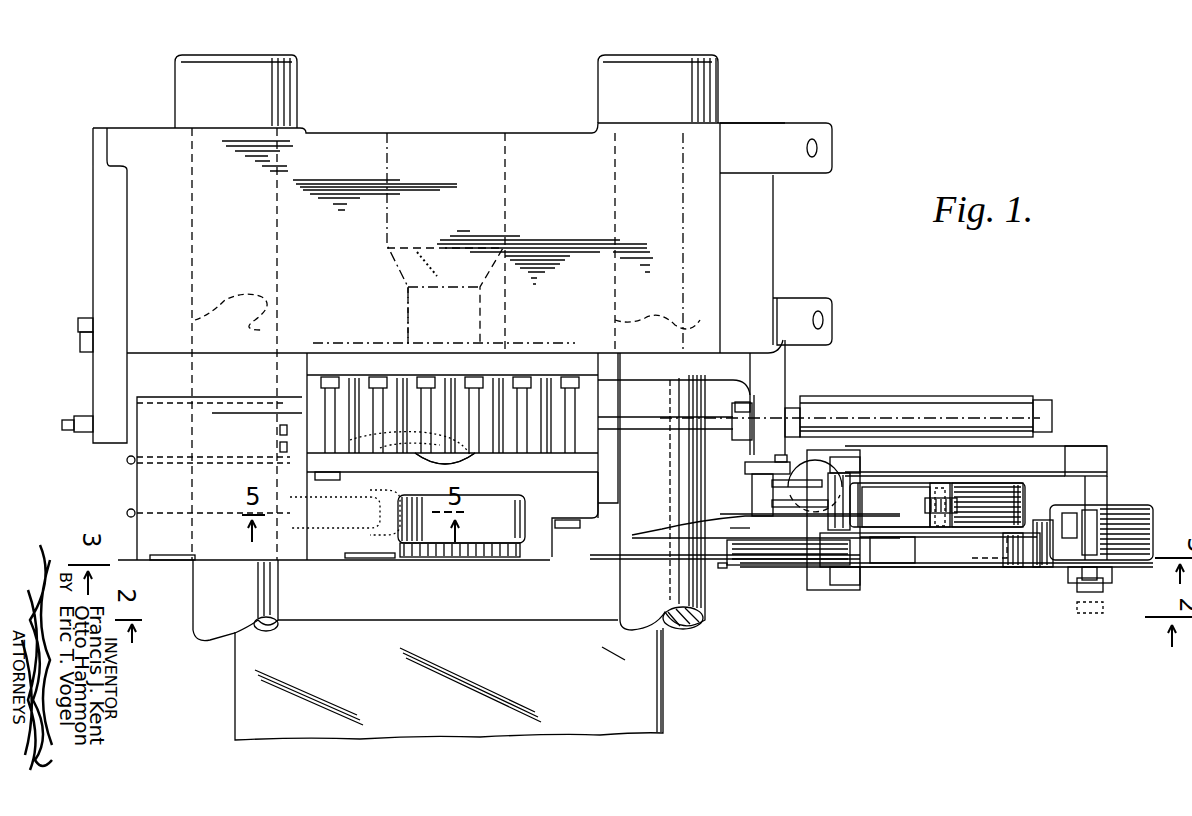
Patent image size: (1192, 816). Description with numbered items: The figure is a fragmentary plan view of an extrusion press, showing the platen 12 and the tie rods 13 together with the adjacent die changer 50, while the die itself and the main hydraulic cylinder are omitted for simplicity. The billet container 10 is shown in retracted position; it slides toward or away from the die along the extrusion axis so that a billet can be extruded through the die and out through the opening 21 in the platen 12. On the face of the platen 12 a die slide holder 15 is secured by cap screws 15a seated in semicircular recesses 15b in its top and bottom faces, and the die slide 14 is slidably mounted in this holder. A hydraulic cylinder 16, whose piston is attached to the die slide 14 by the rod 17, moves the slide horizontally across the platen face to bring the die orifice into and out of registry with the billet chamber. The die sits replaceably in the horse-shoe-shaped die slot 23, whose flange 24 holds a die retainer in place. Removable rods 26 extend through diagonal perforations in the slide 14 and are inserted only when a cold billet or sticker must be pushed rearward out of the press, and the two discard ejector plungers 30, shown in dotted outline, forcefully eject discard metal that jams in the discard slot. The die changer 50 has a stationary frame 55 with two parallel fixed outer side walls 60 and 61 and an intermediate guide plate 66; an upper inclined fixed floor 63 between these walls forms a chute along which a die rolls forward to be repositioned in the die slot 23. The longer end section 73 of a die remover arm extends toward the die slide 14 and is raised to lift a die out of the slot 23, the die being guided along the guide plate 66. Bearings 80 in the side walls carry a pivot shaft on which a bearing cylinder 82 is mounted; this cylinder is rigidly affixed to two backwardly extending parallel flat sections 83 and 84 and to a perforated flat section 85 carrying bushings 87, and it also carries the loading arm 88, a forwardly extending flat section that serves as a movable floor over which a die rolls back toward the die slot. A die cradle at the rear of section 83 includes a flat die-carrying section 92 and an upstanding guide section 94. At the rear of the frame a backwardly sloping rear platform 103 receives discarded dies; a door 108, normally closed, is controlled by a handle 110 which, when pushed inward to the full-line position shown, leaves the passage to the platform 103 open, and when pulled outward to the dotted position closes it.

The billet container 10 is at (645, 684).
The platen 12 is at (365, 148).
The tie rods 13 is at (207, 597).
The die slide 14 is at (240, 545).
The die slide holder 15 is at (540, 360).
The cap screws 15a is at (338, 372).
The semicircular recesses 15b is at (524, 440).
The hydraulic cylinder 16 is at (902, 405).
The rod 17 is at (715, 423).
The opening 21 is at (408, 318).
The die slot 23 is at (468, 548).
The flange 24 is at (405, 557).
The rods 26 is at (128, 513).
The discard ejector plungers 30 is at (388, 493).
The die changer 50 is at (905, 578).
The stationary frame 55 is at (1045, 470).
The outer side wall 60 is at (997, 567).
The outer side wall 61 is at (1100, 470).
The upper inclined fixed floor 63 is at (958, 562).
The intermediate side wall or guide plate 66 is at (652, 532).
The longer end section of die remover arm 73 is at (605, 562).
The bearings 80 is at (850, 468).
The bearing cylinder 82 is at (852, 513).
The flat section 83 is at (912, 527).
The flat section 84 is at (962, 483).
The flat section 85 is at (986, 500).
The bushings 87 is at (940, 488).
The loading arm 88 is at (805, 548).
The flat die-carrying section 92 is at (1020, 565).
The upstanding guide section 94 is at (1031, 537).
The rear platform 103 is at (1127, 512).
The door 108 is at (1068, 522).
The handle 110 is at (1103, 589).